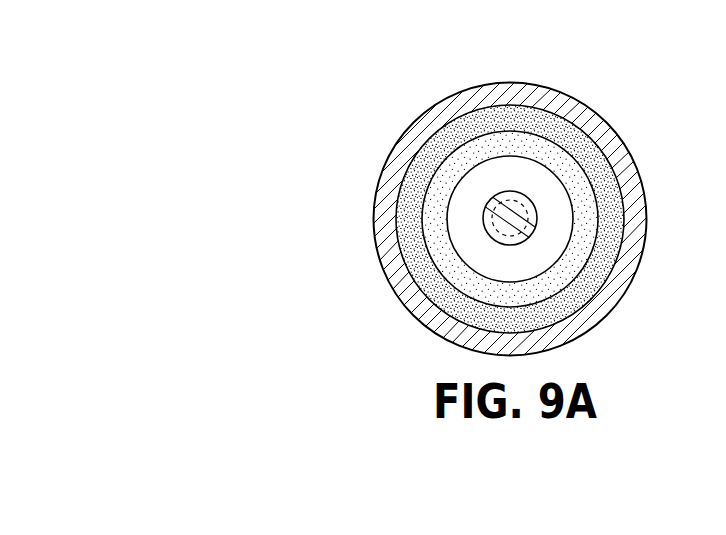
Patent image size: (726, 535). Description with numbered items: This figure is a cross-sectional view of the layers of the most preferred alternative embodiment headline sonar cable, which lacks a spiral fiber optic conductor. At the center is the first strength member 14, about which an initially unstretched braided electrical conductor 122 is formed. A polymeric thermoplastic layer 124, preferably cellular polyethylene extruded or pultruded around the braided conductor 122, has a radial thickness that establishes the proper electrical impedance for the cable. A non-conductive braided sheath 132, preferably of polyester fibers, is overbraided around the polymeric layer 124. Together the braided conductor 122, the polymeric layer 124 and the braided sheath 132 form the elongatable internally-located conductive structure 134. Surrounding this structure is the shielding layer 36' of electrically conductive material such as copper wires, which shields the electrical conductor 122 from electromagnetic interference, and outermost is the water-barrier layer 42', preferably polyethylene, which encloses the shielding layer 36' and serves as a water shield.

The first strength member 14 is at (498, 197).
The braided electrical conductor 122 is at (513, 195).
The polymeric thermoplastic layer 124 is at (535, 177).
The non-conductive braided sheath 132 is at (563, 160).
The elongatable internally-located conductive structure 134 is at (598, 197).
The water-barrier layer 42' is at (532, 219).
The shielding layer 36' is at (542, 219).